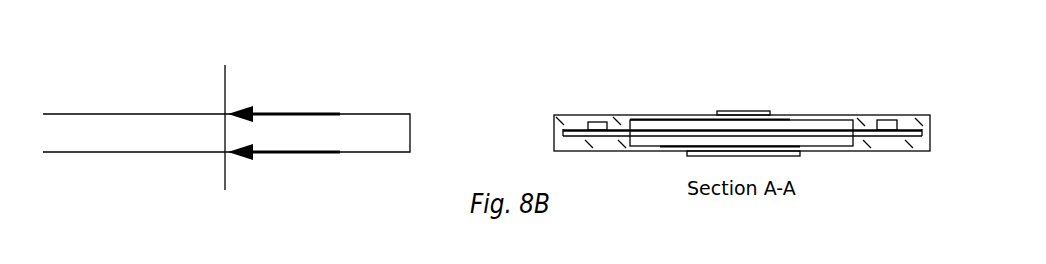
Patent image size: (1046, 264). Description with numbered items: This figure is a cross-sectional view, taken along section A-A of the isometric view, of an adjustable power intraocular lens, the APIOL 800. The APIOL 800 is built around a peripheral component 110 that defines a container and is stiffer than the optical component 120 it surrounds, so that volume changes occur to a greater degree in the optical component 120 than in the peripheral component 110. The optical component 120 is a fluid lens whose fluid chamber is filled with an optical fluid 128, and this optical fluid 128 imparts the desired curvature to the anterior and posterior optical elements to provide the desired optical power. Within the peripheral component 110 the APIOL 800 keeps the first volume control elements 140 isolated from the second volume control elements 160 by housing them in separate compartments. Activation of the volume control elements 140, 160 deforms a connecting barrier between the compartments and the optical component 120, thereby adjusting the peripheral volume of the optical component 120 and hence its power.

The APIOL 800 is at (401, 64).
The peripheral component 110 is at (555, 116).
The second volume control elements 160 is at (596, 120).
The optical component 120 is at (717, 111).
The first volume control elements 140 is at (897, 117).
The optical fluid 128 is at (822, 152).